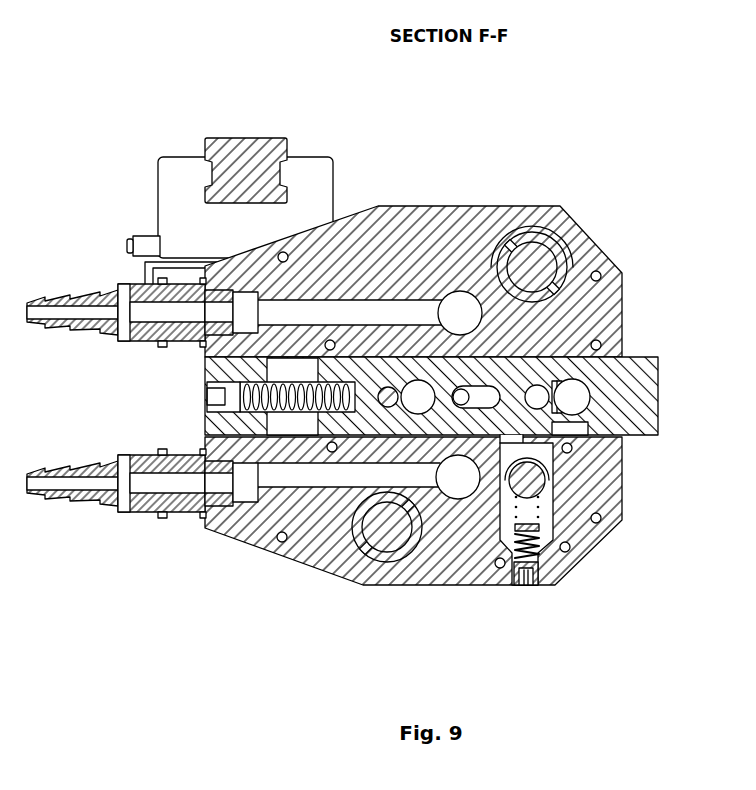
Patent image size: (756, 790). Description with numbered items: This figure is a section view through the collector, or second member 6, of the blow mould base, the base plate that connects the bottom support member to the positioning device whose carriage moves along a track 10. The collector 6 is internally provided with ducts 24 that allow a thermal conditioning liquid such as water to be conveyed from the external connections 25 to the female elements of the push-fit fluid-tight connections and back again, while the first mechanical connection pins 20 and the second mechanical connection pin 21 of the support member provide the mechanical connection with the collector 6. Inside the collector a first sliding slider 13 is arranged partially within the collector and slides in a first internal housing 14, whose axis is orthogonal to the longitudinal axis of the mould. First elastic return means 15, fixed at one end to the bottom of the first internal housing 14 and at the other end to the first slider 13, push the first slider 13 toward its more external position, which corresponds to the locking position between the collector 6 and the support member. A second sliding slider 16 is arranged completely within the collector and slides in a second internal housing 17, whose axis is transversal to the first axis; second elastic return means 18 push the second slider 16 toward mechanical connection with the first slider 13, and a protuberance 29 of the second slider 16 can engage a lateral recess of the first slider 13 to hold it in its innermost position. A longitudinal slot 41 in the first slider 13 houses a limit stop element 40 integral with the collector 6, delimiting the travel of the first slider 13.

The second member 6 is at (591, 262).
The track 10 is at (236, 160).
The first sliding slider 13 is at (661, 388).
The first internal housing 14 is at (280, 422).
The first elastic return means 15 is at (265, 362).
The second sliding slider 16 is at (552, 500).
The second internal housing 17 is at (508, 546).
The second elastic return means 18 is at (538, 550).
The first mechanical connection pins 20 is at (375, 214).
The second mechanical connection pin 21 is at (548, 478).
The ducts 24 is at (389, 388).
The external connections 25 is at (93, 310).
The protuberance 29 is at (558, 462).
The limit stop element 40 is at (420, 312).
The longitudinal slot 41 is at (471, 392).